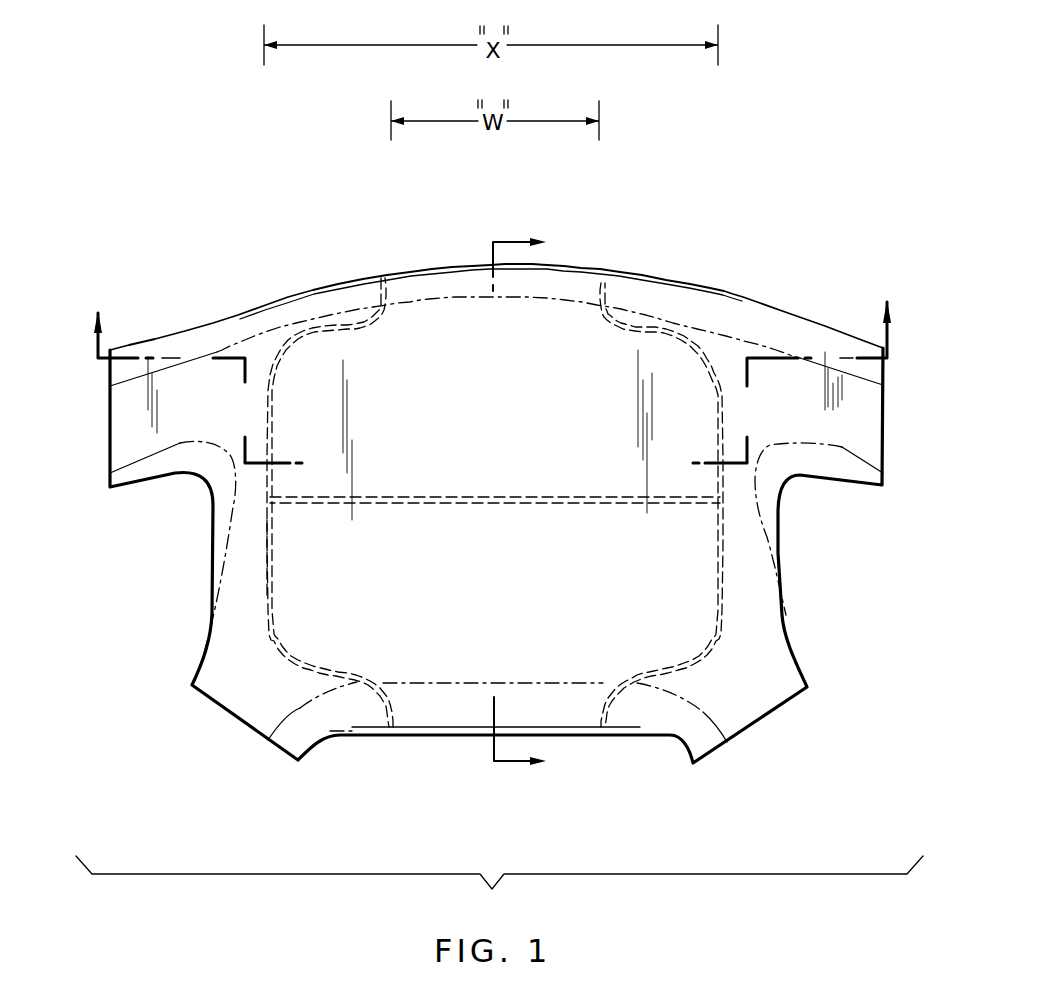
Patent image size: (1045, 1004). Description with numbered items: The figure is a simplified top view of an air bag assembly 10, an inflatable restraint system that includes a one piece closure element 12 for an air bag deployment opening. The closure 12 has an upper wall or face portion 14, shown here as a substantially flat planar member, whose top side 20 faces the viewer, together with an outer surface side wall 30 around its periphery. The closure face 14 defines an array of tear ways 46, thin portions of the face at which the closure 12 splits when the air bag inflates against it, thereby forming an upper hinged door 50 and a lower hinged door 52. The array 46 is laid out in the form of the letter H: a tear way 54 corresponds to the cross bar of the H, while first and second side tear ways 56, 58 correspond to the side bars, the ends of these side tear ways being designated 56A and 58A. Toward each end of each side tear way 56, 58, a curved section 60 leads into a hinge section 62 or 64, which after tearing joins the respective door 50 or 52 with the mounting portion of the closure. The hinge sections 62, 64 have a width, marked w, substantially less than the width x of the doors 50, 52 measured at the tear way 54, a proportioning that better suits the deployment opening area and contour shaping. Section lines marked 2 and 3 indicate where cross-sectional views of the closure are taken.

The air bag assembly 10 is at (224, 745).
The closure element 12 is at (407, 643).
The face portion 14 is at (483, 597).
The top side 20 is at (552, 313).
The outer surface side wall 30 is at (767, 510).
The array of tear ways 46 is at (280, 546).
The upper hinged door 50 is at (392, 353).
The lower hinged door 52 is at (463, 550).
The tear way 54 is at (422, 500).
The first side tear way 56 is at (273, 420).
The end of first side tear way 56A is at (383, 277).
The second side tear way 58 is at (718, 573).
The end of second side tear way 58A is at (603, 290).
The curved section 60 is at (352, 327).
The hinge section 62 is at (488, 295).
The hinge section 64 is at (562, 720).
The section line 2- 2 is at (495, 381).
The section line 3- 3 is at (503, 500).